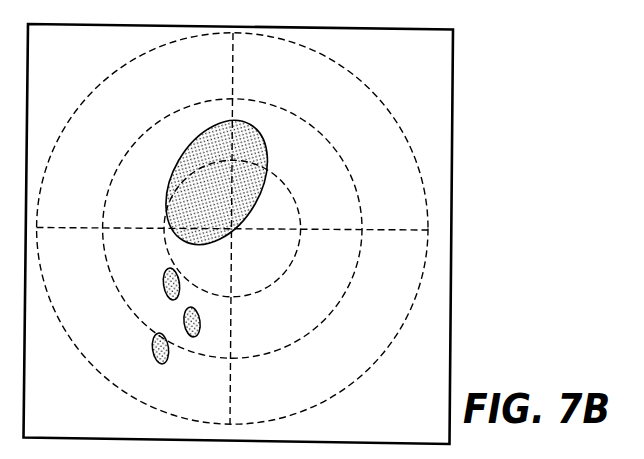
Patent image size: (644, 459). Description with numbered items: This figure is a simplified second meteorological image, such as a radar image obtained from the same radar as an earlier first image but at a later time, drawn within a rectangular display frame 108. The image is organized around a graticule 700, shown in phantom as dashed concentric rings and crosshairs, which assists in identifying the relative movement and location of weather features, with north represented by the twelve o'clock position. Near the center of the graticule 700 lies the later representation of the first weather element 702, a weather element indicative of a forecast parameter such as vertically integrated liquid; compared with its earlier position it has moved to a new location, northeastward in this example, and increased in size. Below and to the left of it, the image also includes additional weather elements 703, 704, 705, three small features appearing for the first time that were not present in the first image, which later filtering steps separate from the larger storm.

The display screen / radar display frame 108 is at (452, 238).
The graticule 700 is at (93, 90).
The first weather element 702 is at (183, 158).
The additional weather element 703 is at (165, 282).
The additional weather element 704 is at (187, 322).
The additional weather element 705 is at (153, 347).